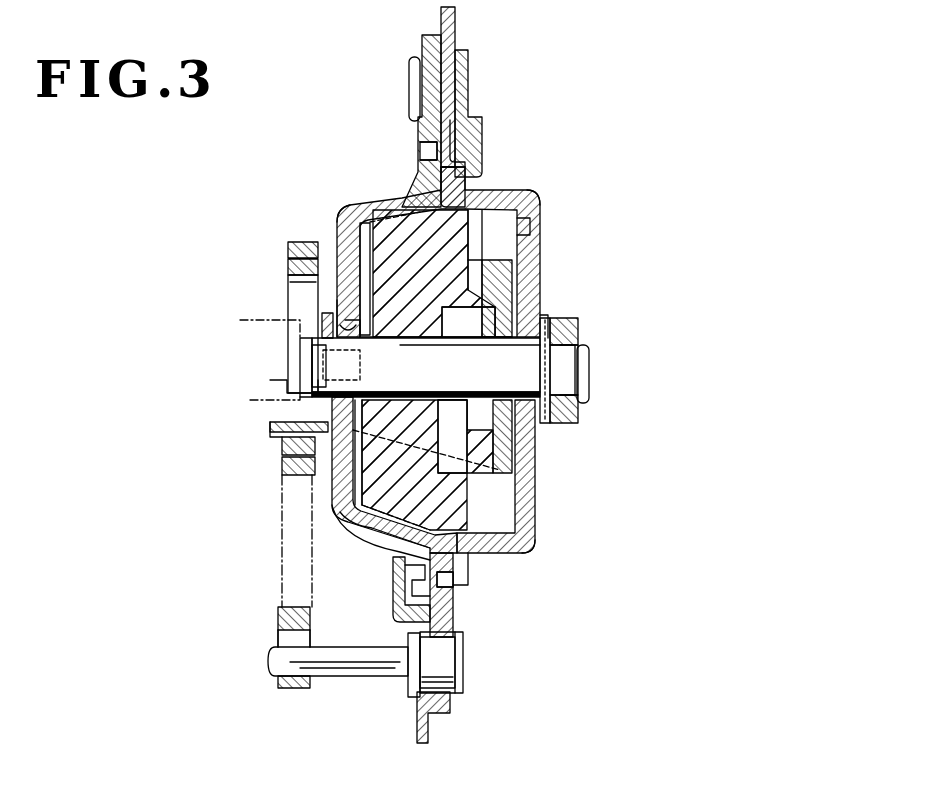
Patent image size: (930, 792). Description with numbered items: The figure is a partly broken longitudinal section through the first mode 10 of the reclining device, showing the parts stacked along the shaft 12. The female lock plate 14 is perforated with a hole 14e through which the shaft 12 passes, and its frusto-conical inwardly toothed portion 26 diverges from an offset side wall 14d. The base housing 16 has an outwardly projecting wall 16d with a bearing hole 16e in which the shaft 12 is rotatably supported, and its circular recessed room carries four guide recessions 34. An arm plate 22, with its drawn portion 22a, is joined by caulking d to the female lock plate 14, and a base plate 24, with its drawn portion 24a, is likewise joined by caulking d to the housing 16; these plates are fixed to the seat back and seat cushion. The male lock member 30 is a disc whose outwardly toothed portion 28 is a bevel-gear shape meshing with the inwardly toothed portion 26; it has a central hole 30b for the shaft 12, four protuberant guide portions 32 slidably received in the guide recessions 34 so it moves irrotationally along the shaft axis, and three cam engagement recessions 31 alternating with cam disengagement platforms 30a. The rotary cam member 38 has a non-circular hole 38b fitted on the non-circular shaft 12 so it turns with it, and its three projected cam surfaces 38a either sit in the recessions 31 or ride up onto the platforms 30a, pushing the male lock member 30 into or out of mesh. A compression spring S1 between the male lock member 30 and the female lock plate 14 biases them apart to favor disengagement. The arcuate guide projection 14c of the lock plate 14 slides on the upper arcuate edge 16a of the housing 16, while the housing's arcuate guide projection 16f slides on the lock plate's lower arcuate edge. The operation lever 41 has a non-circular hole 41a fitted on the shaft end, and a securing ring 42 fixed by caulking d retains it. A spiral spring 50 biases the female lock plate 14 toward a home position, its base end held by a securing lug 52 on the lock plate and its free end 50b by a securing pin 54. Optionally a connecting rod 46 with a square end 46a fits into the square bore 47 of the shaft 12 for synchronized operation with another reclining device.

The first mode 10 is at (708, 208).
The shaft 12 is at (355, 465).
The female lock plate 14 is at (422, 48).
The arcuate guide projection 14c is at (420, 140).
The offset side wall 14d is at (340, 240).
The hole 14e is at (350, 310).
The base housing 16 is at (540, 535).
The upper arcuate edge 16a is at (441, 170).
The outwardly projecting wall 16d is at (540, 228).
The bearing hole 16e is at (548, 320).
The arcuate guide projection 16f is at (455, 595).
The arm plate 22 is at (460, 32).
The pin head 22a is at (482, 137).
The base plate 24 is at (430, 730).
The bracket 24a is at (400, 593).
The circular inwardly toothed portion 26 is at (365, 480).
The circular outwardly toothed portion 28 is at (375, 520).
The male lock member 30 is at (470, 520).
The cam disengagement platforms 30a is at (500, 230).
The circular hole 30b is at (440, 338).
The cam engagement recessions 31 is at (475, 500).
The protuberant guide portions 32 is at (482, 205).
The guide recessions 34 is at (540, 210).
The rotary cam member 38 is at (520, 260).
The projected cam surfaces 38a is at (505, 300).
The non-circular hole 38b is at (505, 338).
The operation lever 41 is at (550, 423).
The non-circular hole 41a is at (580, 405).
The securing ring 42 is at (565, 420).
The connecting rod 46 is at (235, 405).
The square end 46a is at (330, 360).
The square bore 47 is at (360, 362).
The spiral spring 50 is at (285, 460).
The free end 50b is at (278, 655).
The securing lug 52 is at (283, 432).
The securing pin 54 is at (348, 678).
The compression spring S1 is at (340, 300).
The caulking d is at (410, 80).